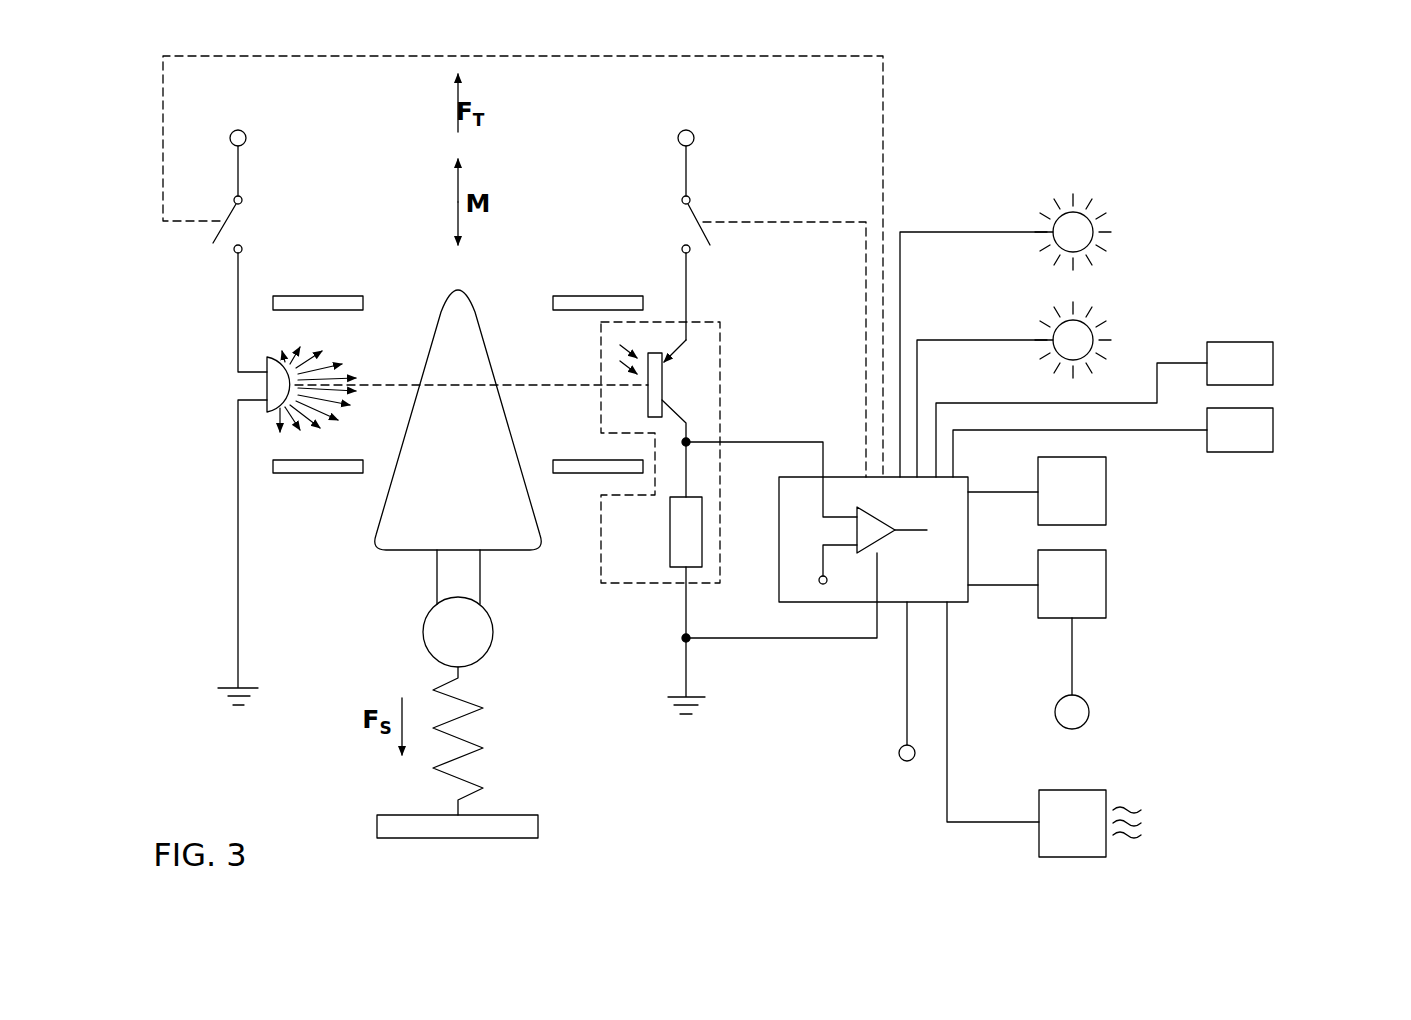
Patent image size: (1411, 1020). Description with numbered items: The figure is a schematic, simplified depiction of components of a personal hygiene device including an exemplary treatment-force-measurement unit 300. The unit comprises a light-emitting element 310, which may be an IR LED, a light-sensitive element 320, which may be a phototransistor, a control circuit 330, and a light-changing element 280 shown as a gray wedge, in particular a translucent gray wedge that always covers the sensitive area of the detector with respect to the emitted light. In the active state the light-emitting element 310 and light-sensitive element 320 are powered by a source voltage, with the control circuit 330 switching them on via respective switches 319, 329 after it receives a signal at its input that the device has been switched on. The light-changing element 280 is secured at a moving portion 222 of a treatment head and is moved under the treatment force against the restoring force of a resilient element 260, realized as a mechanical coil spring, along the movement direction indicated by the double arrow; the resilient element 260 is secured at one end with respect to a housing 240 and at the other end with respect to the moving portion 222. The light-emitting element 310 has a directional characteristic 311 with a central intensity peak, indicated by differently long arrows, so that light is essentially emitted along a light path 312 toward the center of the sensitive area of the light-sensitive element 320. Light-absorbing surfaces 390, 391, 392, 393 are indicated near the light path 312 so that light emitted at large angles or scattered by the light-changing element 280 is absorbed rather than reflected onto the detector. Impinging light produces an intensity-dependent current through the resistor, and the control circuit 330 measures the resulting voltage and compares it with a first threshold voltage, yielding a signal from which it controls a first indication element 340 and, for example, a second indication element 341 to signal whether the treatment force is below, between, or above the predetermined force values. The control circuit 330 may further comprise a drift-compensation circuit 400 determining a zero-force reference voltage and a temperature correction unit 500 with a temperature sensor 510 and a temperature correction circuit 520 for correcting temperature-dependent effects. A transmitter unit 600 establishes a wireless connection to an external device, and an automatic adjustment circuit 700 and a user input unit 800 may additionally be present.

The treatment-force-measurement unit 300 is at (1008, 186).
The light-emitting element 310 is at (267, 380).
The directional characteristic 311 is at (343, 370).
The light path 312 is at (523, 382).
The switch 319 is at (213, 237).
The light-sensitive element 320 is at (720, 357).
The switch 329 is at (697, 215).
The control circuit 330 is at (895, 602).
The first indication element 340 is at (1097, 327).
The second indication element 341 is at (1097, 207).
The light-absorbing surface 390 is at (318, 295).
The light-absorbing surface 391 is at (596, 295).
The light-absorbing surface 392 is at (317, 475).
The light-absorbing surface 393 is at (570, 475).
The light-changing element 280 is at (407, 550).
The moving portion 222 is at (494, 628).
The resilient element 260 is at (483, 748).
The housing 240 is at (538, 826).
The drift-compensation circuit 400 is at (1095, 493).
The temperature correction circuit 520 is at (1095, 585).
The temperature sensor 510 is at (1089, 710).
The temperature correction unit 500 is at (1152, 645).
The transmitter unit 600 is at (1050, 840).
The automatic adjustment circuit 700 is at (1263, 365).
The user input unit 800 is at (1263, 435).